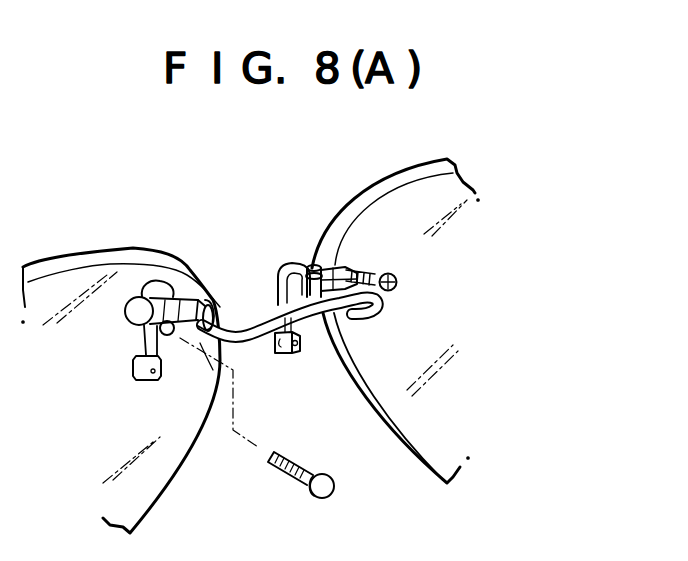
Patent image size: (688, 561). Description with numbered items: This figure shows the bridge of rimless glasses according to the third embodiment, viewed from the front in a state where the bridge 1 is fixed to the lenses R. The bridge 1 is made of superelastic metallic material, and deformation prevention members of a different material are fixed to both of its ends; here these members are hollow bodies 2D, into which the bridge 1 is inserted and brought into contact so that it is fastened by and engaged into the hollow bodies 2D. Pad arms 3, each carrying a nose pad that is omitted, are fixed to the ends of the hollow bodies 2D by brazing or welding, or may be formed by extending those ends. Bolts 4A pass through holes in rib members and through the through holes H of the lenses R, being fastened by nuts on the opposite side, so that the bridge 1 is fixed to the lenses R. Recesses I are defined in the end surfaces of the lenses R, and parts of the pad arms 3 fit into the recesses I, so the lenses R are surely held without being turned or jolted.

The bridge 1 is at (248, 322).
The pad arm 3 is at (280, 284).
The bolt 4A is at (398, 278).
The hollow body 2D is at (342, 302).
The through hole H is at (177, 333).
The recess I is at (221, 310).
The lens R is at (463, 431).